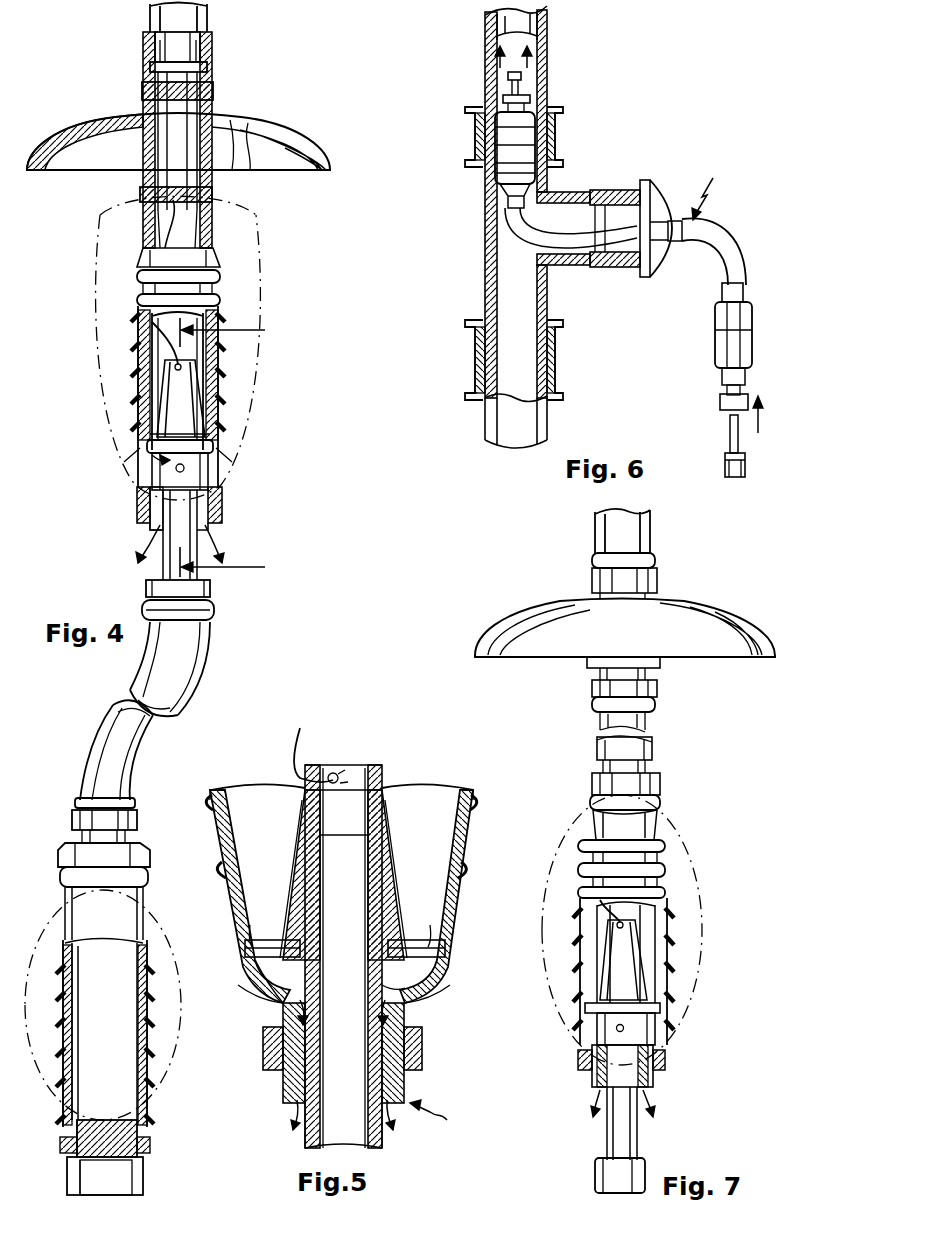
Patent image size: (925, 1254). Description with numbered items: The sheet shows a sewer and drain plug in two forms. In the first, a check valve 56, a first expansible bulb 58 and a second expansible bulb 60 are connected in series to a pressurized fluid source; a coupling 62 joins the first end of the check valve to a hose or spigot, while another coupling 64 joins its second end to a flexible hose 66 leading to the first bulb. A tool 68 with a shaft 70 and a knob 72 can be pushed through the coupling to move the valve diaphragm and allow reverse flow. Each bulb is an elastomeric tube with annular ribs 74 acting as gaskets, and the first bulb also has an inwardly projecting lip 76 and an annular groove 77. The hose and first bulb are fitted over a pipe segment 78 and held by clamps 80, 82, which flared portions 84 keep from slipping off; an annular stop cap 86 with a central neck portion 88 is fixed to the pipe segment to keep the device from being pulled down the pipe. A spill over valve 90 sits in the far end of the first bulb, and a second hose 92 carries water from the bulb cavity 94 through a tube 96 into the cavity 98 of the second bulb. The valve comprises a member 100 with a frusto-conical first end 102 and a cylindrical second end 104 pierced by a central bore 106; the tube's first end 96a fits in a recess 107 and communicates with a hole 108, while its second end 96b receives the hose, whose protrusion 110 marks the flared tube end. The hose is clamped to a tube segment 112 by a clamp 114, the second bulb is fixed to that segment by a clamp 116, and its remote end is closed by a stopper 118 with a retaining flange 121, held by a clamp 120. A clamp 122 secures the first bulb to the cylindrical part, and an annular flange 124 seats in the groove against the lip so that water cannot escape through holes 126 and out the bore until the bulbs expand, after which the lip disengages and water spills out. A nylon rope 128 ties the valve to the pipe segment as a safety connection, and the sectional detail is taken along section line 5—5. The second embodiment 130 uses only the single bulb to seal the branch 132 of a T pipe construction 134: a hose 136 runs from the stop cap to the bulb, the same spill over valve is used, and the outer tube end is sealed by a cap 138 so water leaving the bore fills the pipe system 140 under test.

In FIG. 4, the section line 5 is at (231, 450).
In FIG. 6, the check valve 56 is at (725, 345).
In FIG. 4, the first expansible bulb 58 is at (140, 407).
In FIG. 5, the first expansible bulb 58 is at (467, 843).
In FIG. 6, the first expansible bulb 58 is at (510, 137).
In FIG. 7, the first expansible bulb 58 is at (660, 857).
In FIG. 4, the second expansible bulb 60 is at (143, 1053).
In FIG. 6, the coupling 62 is at (720, 400).
In FIG. 6, the coupling 64 is at (735, 287).
In FIG. 4, the flexible hose 66 is at (208, 12).
In FIG. 6, the flexible hose 66 is at (723, 245).
In FIG. 7, the flexible hose 66 is at (607, 538).
In FIG. 6, the tool 68 is at (743, 457).
In FIG. 6, the shaft 70 is at (730, 425).
In FIG. 6, the retaining handle or knob 72 is at (723, 470).
In FIG. 4, the annular ribs 74 is at (133, 373).
In FIG. 4, the annular lip 76 is at (213, 433).
In FIG. 5, the annular lip 76 is at (251, 925).
In FIG. 4, the annular groove 77 is at (232, 460).
In FIG. 5, the annular groove 77 is at (433, 960).
In FIG. 4, the pipe segment 78 is at (170, 102).
In FIG. 4, the clamp 80 is at (213, 88).
In FIG. 4, the clamp 82 is at (213, 195).
In FIG. 4, the flared portions 84 is at (173, 65).
In FIG. 4, the annular stop cap 86 is at (280, 123).
In FIG. 6, the annular stop cap 86 is at (653, 273).
In FIG. 7, the annular stop cap 86 is at (550, 602).
In FIG. 4, the central cylindrical neck portion 88 is at (142, 147).
In FIG. 4, the spill over valve 90 is at (133, 527).
In FIG. 5, the spill over valve 90 is at (443, 1119).
In FIG. 4, the flexible hose 92 is at (173, 672).
In FIG. 4, the cavity 94 is at (198, 348).
In FIG. 5, the cavity 94 is at (272, 783).
In FIG. 5, the tube 96 is at (375, 1140).
In FIG. 7, the tube 96 is at (617, 1122).
In FIG. 5, the first end of tube 96a is at (353, 880).
In FIG. 4, the second end of tube 96b is at (165, 567).
In FIG. 4, the cavity 98 is at (118, 1073).
In FIG. 4, the member 100 is at (160, 462).
In FIG. 5, the member 100 is at (288, 972).
In FIG. 4, the frusto-conical first end 102 is at (185, 397).
In FIG. 5, the frusto-conical first end 102 is at (385, 837).
In FIG. 4, the cylindrical second end 104 is at (148, 482).
In FIG. 5, the cylindrical second end 104 is at (288, 1100).
In FIG. 5, the central bore 106 is at (303, 1058).
In FIG. 7, the central bore 106 is at (640, 1065).
In FIG. 5, the cylindrical recess 107 is at (313, 867).
In FIG. 4, the hole 108 is at (210, 590).
In FIG. 5, the hole 108 is at (353, 768).
In FIG. 4, the protrusion 110 is at (193, 610).
In FIG. 4, the tube segment 112 is at (80, 837).
In FIG. 4, the clamp 114 is at (88, 807).
In FIG. 4, the clamp 116 is at (145, 855).
In FIG. 4, the stopper 118 is at (107, 1182).
In FIG. 4, the clamp 120 is at (147, 1140).
In FIG. 4, the retaining flange 121 is at (77, 1133).
In FIG. 4, the clamp 122 is at (220, 502).
In FIG. 5, the clamp 122 is at (423, 1057).
In FIG. 4, the annular flange 124 is at (157, 443).
In FIG. 5, the annular flange 124 is at (413, 943).
In FIG. 4, the holes 126 is at (185, 468).
In FIG. 5, the holes 126 is at (405, 988).
In FIG. 7, the holes 126 is at (627, 1028).
In FIG. 4, the NYLON rope 128 is at (157, 323).
In FIG. 5, the NYLON rope 128 is at (303, 740).
In FIG. 7, the NYLON rope 128 is at (663, 913).
In FIG. 6, the second embodiment 130 is at (723, 190).
In FIG. 6, the branch 132 is at (557, 133).
In FIG. 6, the T pipe construction 134 is at (482, 268).
In FIG. 6, the hose 136 is at (572, 243).
In FIG. 7, the hose 136 is at (653, 718).
In FIG. 6, the cap 138 is at (523, 67).
In FIG. 7, the cap 138 is at (610, 1167).
In FIG. 6, the pipe system 140 is at (498, 30).